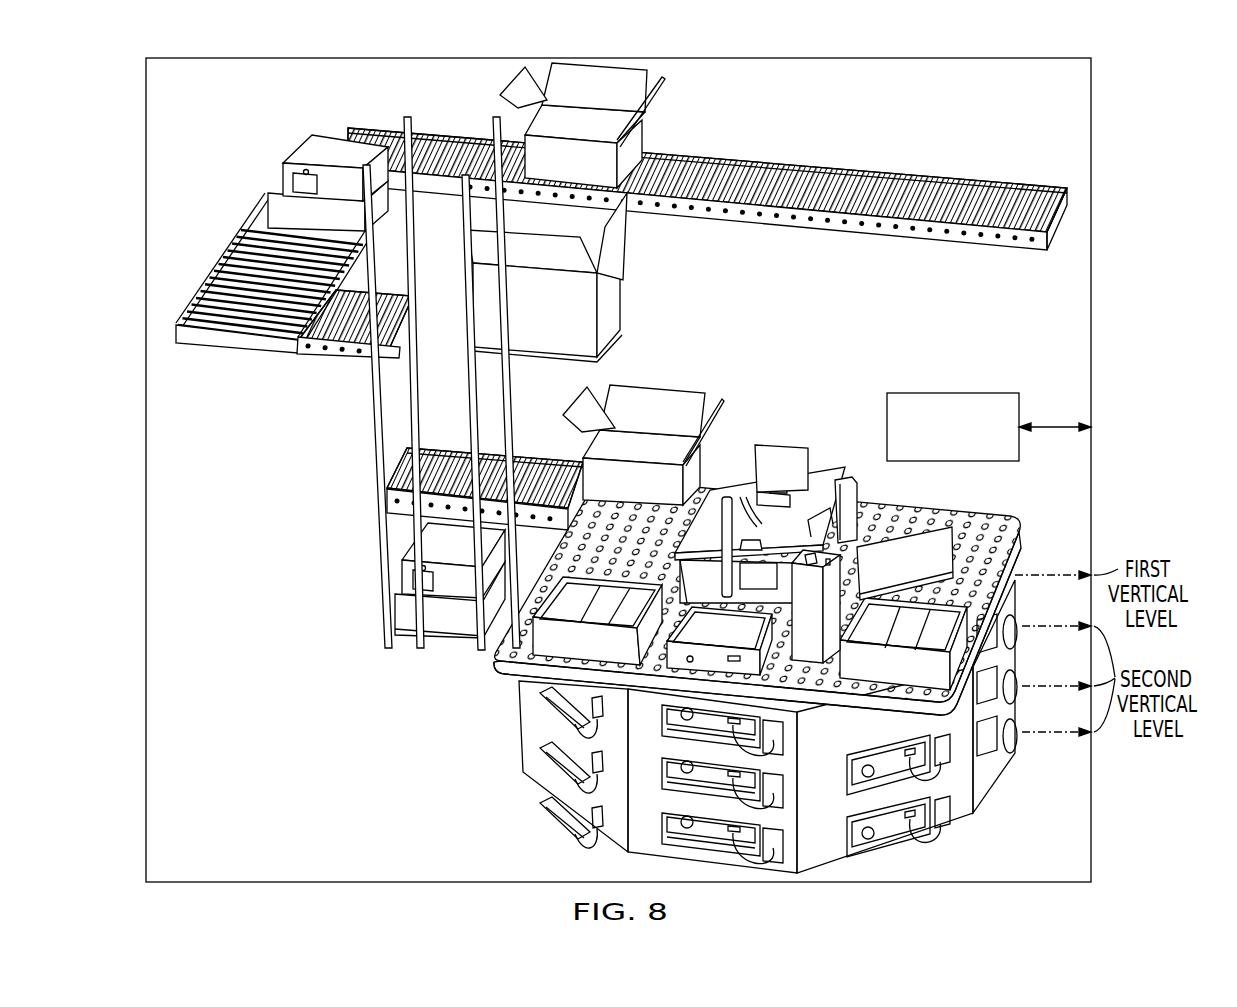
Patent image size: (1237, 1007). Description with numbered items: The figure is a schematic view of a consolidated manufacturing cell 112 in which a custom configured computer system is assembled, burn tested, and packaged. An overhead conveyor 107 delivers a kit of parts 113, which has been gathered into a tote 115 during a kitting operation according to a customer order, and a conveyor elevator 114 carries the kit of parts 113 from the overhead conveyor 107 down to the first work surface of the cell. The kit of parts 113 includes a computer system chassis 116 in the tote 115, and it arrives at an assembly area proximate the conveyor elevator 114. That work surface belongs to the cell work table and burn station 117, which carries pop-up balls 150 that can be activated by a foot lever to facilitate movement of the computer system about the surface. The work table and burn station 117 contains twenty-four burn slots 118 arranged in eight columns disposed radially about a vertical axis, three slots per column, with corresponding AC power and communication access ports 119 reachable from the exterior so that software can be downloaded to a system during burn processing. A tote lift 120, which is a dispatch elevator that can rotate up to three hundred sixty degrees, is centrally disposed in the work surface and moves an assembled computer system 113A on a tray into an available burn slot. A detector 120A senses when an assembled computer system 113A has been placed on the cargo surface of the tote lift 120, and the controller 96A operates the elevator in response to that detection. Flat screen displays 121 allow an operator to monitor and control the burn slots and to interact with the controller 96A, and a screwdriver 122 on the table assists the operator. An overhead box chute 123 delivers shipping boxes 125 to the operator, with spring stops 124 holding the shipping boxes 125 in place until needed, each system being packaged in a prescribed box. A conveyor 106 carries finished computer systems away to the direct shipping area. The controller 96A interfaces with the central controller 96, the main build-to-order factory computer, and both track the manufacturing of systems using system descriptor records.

The central controller 96 is at (1119, 454).
The controller 96A is at (1005, 392).
The conveyor 106 is at (396, 470).
The overhead conveyor 107 is at (247, 232).
The consolidated manufacturing cell 112 is at (1103, 840).
The kit of parts 113 is at (312, 125).
The assembled computer system 113A is at (868, 548).
The conveyor elevator 114 is at (403, 643).
The tote 115 is at (590, 654).
The computer system chassis 116 is at (683, 688).
The cell work table and burn station 117 is at (1025, 560).
The burn slots 118 is at (562, 783).
The AC power and communication access ports 119 is at (777, 840).
The tote lift 120 is at (768, 589).
The detector 120A is at (748, 636).
The flat screen displays 121 is at (862, 482).
The screwdriver 122 is at (670, 563).
The overhead box chute 123 is at (614, 278).
The spring stops 124 is at (622, 309).
The shipping boxes 125 is at (664, 78).
The pop-up balls 150 is at (610, 541).